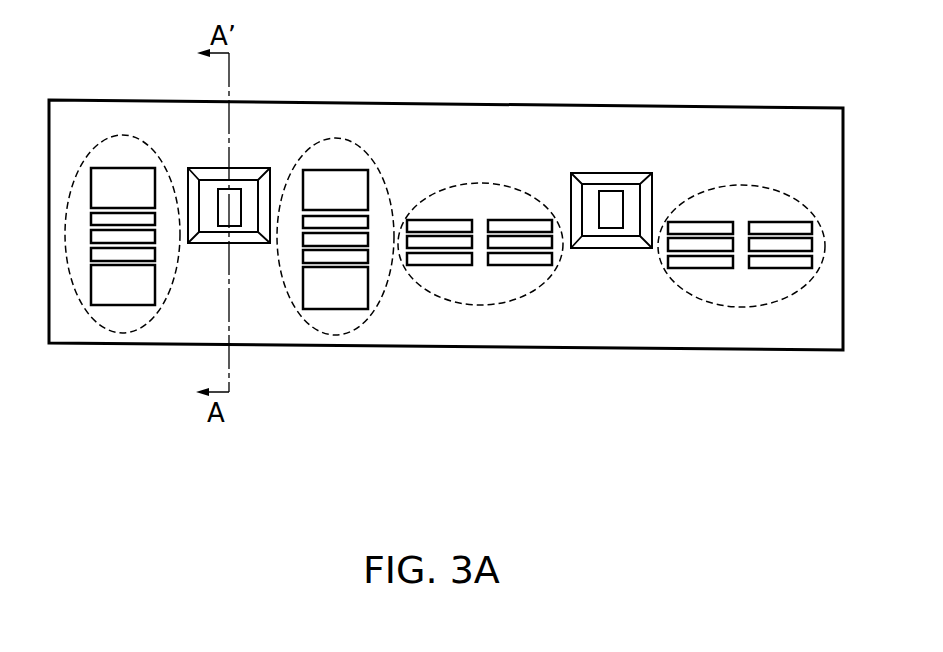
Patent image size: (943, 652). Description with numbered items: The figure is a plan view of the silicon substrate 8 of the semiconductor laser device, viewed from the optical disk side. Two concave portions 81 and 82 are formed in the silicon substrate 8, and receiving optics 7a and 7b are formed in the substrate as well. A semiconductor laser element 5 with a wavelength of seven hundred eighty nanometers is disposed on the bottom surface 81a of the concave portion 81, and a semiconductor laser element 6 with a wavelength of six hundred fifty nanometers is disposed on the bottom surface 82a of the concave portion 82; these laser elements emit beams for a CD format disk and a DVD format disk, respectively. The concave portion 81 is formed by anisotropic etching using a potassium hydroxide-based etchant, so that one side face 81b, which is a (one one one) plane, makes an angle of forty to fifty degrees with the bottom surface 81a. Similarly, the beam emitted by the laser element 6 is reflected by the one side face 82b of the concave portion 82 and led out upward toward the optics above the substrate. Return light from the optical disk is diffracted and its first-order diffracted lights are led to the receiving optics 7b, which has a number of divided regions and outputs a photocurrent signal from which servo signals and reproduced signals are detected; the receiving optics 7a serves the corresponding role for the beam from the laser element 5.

The semiconductor laser element 5 is at (223, 189).
The semiconductor laser element 6 is at (614, 198).
The receiving optics 7a is at (355, 328).
The receiving optics 7b is at (708, 303).
The silicon substrate 8 is at (745, 113).
The concave portion 81 is at (191, 150).
The bottom surface 81a is at (245, 183).
The side face 81b is at (245, 237).
The concave portion 82 is at (584, 152).
The bottom surface 82a is at (630, 189).
The side face 82b is at (633, 240).